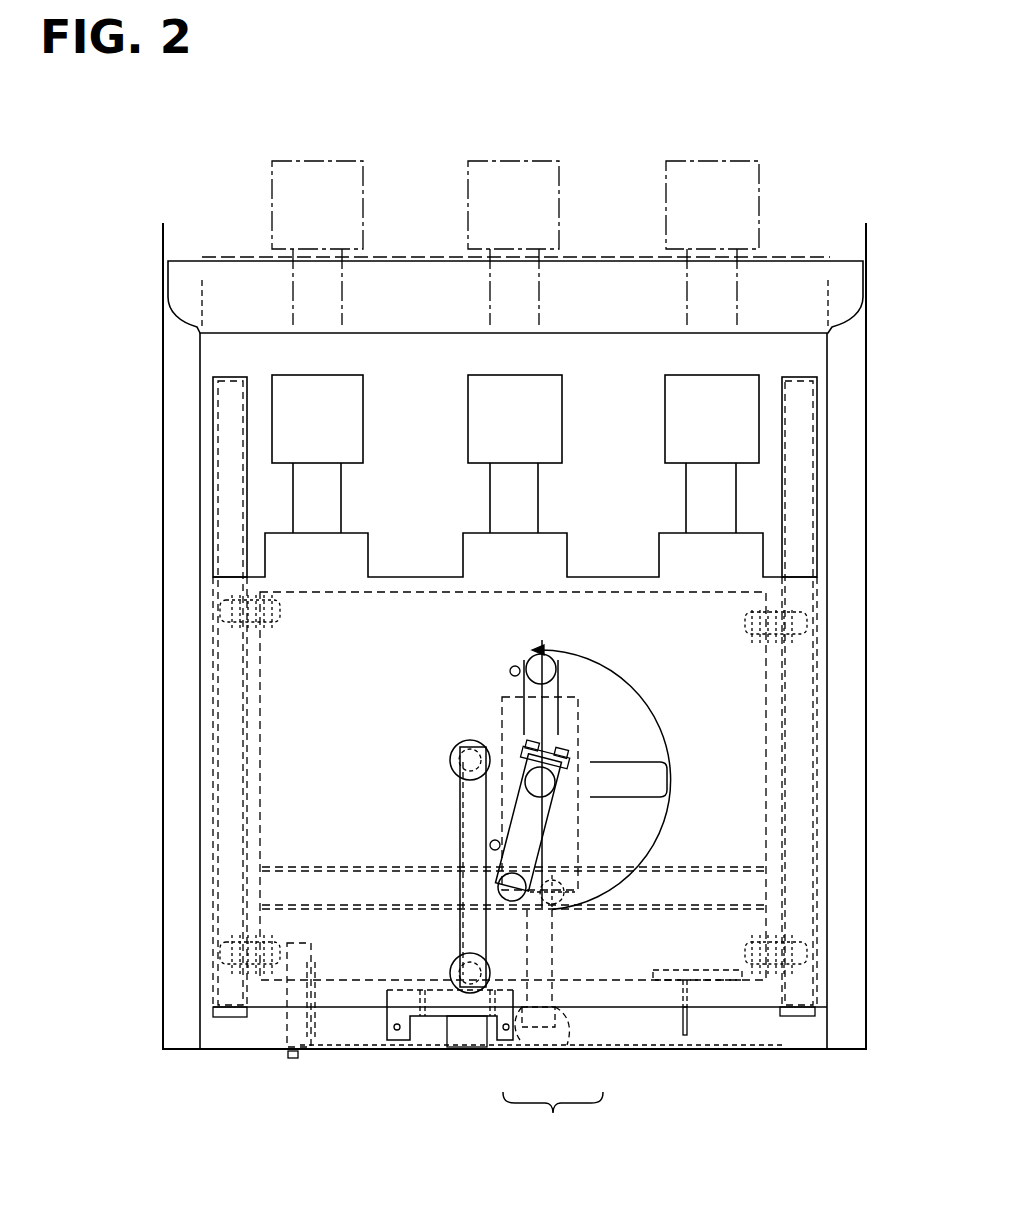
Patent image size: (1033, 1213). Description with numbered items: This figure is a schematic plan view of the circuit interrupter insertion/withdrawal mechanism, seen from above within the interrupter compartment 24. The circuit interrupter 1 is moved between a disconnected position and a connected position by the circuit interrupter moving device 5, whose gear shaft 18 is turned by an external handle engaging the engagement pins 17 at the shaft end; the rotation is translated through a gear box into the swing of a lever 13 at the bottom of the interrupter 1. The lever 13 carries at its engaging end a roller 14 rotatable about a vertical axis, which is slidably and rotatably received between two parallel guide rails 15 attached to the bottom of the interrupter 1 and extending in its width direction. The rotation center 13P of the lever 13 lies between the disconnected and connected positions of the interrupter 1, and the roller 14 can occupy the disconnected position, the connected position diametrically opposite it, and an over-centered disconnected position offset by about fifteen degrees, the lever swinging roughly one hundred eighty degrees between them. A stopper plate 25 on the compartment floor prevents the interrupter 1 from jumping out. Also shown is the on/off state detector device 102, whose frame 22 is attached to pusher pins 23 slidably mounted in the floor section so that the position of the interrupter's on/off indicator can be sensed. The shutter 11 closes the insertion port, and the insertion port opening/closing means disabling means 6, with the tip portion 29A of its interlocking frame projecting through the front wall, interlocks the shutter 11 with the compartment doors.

The circuit interrupter 1 is at (805, 708).
The circuit interrupter moving device 5 is at (567, 1146).
The insertion port opening/closing means disabling means 6 is at (287, 1018).
The shutter 11 is at (732, 1050).
The lever 13 is at (543, 828).
The rotation center 13P is at (560, 785).
The roller 14 is at (537, 663).
The guide rails 15 is at (302, 905).
The engagement pins 17 is at (567, 1040).
The gear shaft 18 is at (520, 1040).
The frame 22 is at (457, 843).
The pusher pins 23 is at (470, 740).
The interrupter compartment 24 is at (515, 270).
The stopper plate 25 is at (468, 1048).
The tip portion 29A is at (293, 1058).
The on/off state detector device 102 is at (458, 820).